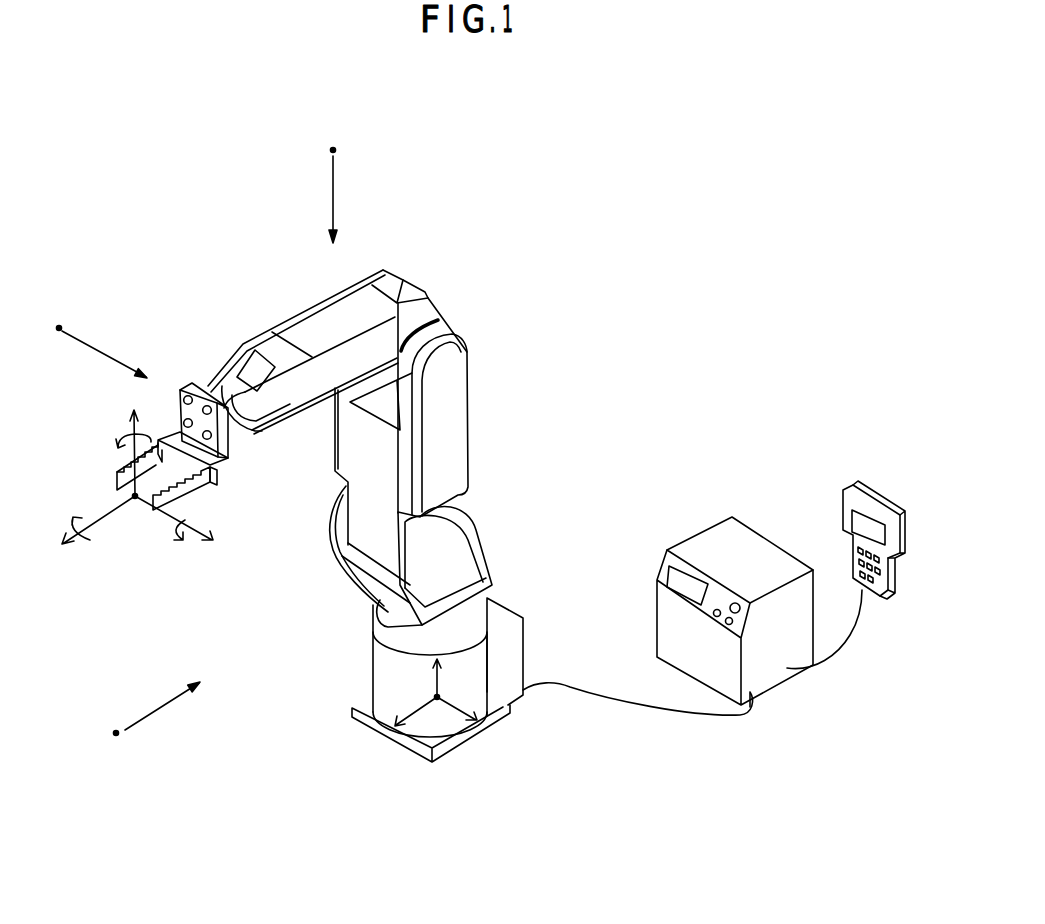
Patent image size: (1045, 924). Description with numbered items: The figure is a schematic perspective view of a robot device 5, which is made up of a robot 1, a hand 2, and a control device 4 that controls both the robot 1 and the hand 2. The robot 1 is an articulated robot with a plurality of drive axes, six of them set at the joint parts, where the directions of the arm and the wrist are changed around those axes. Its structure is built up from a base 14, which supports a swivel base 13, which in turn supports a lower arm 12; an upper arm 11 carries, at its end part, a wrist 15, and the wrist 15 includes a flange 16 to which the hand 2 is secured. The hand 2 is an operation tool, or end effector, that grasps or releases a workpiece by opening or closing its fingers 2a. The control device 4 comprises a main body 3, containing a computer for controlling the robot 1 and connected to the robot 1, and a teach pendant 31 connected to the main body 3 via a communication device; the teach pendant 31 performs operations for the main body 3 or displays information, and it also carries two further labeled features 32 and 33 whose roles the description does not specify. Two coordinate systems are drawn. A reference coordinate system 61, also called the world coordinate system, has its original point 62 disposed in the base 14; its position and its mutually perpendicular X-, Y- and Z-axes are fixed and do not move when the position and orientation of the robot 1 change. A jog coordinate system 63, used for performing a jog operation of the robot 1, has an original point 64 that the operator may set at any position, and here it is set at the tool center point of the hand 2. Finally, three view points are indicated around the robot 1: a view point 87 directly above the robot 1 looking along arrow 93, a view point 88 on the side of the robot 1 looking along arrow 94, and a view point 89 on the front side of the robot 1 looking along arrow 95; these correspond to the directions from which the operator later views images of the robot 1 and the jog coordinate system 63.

The robot 1 is at (395, 289).
The hand 2 is at (220, 460).
The fingers 2a is at (187, 492).
The main body 3 is at (755, 557).
The control device 4 is at (858, 425).
The robot device 5 is at (500, 266).
The upper arm 11 is at (308, 323).
The lower arm 12 is at (455, 410).
The swivel base 13 is at (470, 577).
The base 14 is at (372, 647).
The wrist 15 is at (232, 385).
The flange 16 is at (253, 435).
The teach pendant 31 is at (868, 503).
The operation keys 32 is at (888, 593).
The display 33 is at (878, 532).
The reference coordinate system 61 is at (417, 697).
The original point 62 is at (437, 700).
The jog coordinate system 63 is at (103, 502).
The original point 64 is at (135, 499).
The view point 87 is at (333, 148).
The view point 88 is at (58, 326).
The view point 89 is at (115, 731).
The arrow 93 is at (336, 190).
The arrow 94 is at (99, 351).
The arrow 95 is at (170, 707).